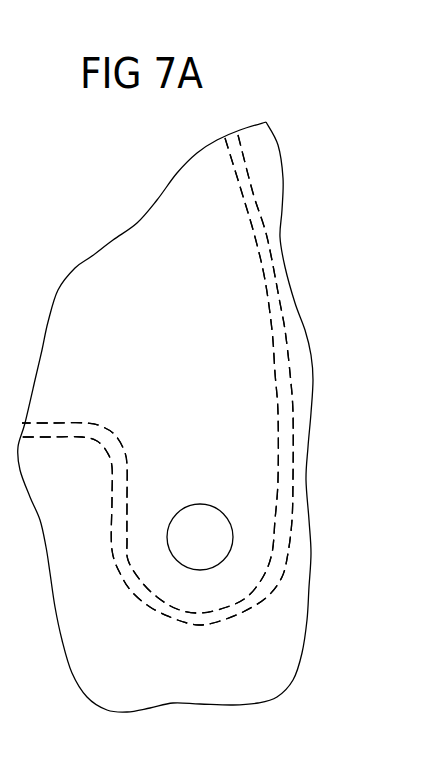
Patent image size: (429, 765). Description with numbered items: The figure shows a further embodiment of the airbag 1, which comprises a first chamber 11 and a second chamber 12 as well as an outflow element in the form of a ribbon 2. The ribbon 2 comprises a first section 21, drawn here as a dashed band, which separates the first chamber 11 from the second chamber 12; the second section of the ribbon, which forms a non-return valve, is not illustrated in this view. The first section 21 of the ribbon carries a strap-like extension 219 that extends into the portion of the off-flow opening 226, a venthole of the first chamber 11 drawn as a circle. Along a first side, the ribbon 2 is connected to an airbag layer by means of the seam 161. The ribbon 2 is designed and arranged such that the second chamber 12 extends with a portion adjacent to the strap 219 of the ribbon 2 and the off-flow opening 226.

The airbag 1 is at (90, 205).
The ribbon 2 is at (260, 338).
The first chamber 11 is at (242, 263).
The first section 21 is at (255, 377).
The second chamber 12 is at (135, 682).
The seam 161 is at (200, 612).
The strap-like extension 219 is at (245, 565).
The off-flow opening 226 is at (220, 542).